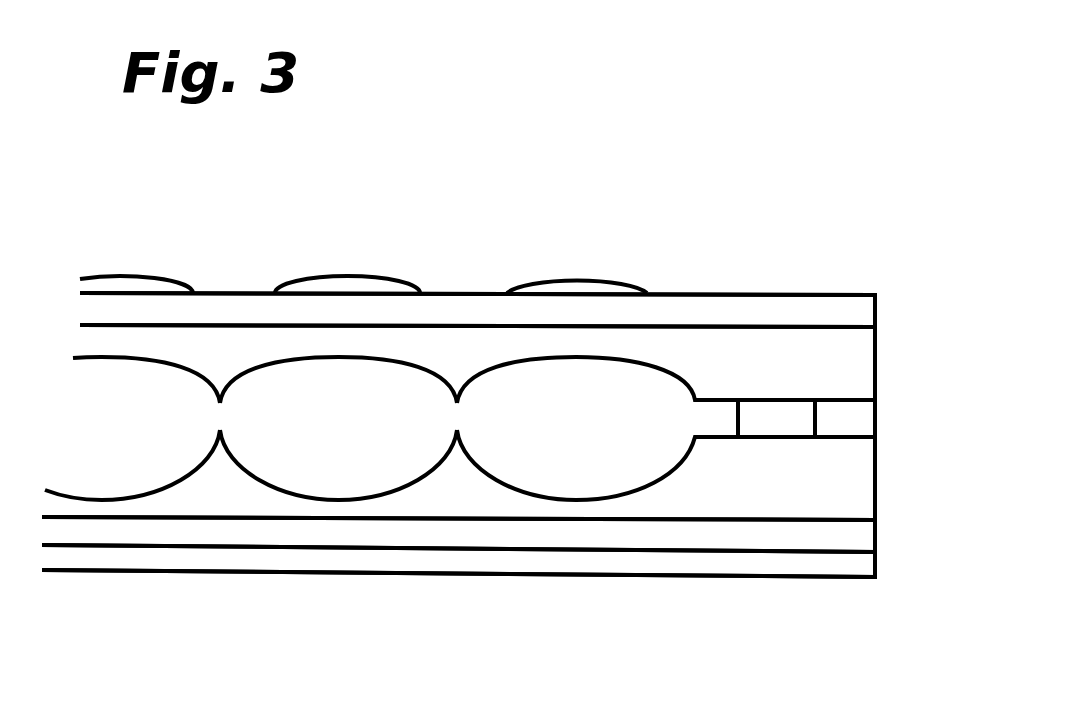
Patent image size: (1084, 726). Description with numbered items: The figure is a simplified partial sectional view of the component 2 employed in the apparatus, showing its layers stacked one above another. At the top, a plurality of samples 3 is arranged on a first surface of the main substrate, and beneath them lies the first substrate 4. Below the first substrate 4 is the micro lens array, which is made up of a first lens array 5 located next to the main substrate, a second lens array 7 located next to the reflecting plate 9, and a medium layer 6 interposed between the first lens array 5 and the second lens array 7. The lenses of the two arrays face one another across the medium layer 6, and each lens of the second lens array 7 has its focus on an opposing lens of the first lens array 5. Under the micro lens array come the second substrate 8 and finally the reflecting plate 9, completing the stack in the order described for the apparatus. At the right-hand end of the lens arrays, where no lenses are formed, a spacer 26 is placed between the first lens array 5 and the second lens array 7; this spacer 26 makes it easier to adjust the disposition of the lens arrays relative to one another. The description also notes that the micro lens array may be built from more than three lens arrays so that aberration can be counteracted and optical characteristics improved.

The component 2 is at (453, 702).
The samples 3 is at (340, 276).
The first substrate 4 is at (862, 305).
The first lens array 5 is at (862, 365).
The medium layer 6 is at (862, 425).
The second lens array 7 is at (862, 487).
The second substrate 8 is at (862, 527).
The reflecting plate 9 is at (818, 564).
The spacer 26 is at (768, 407).